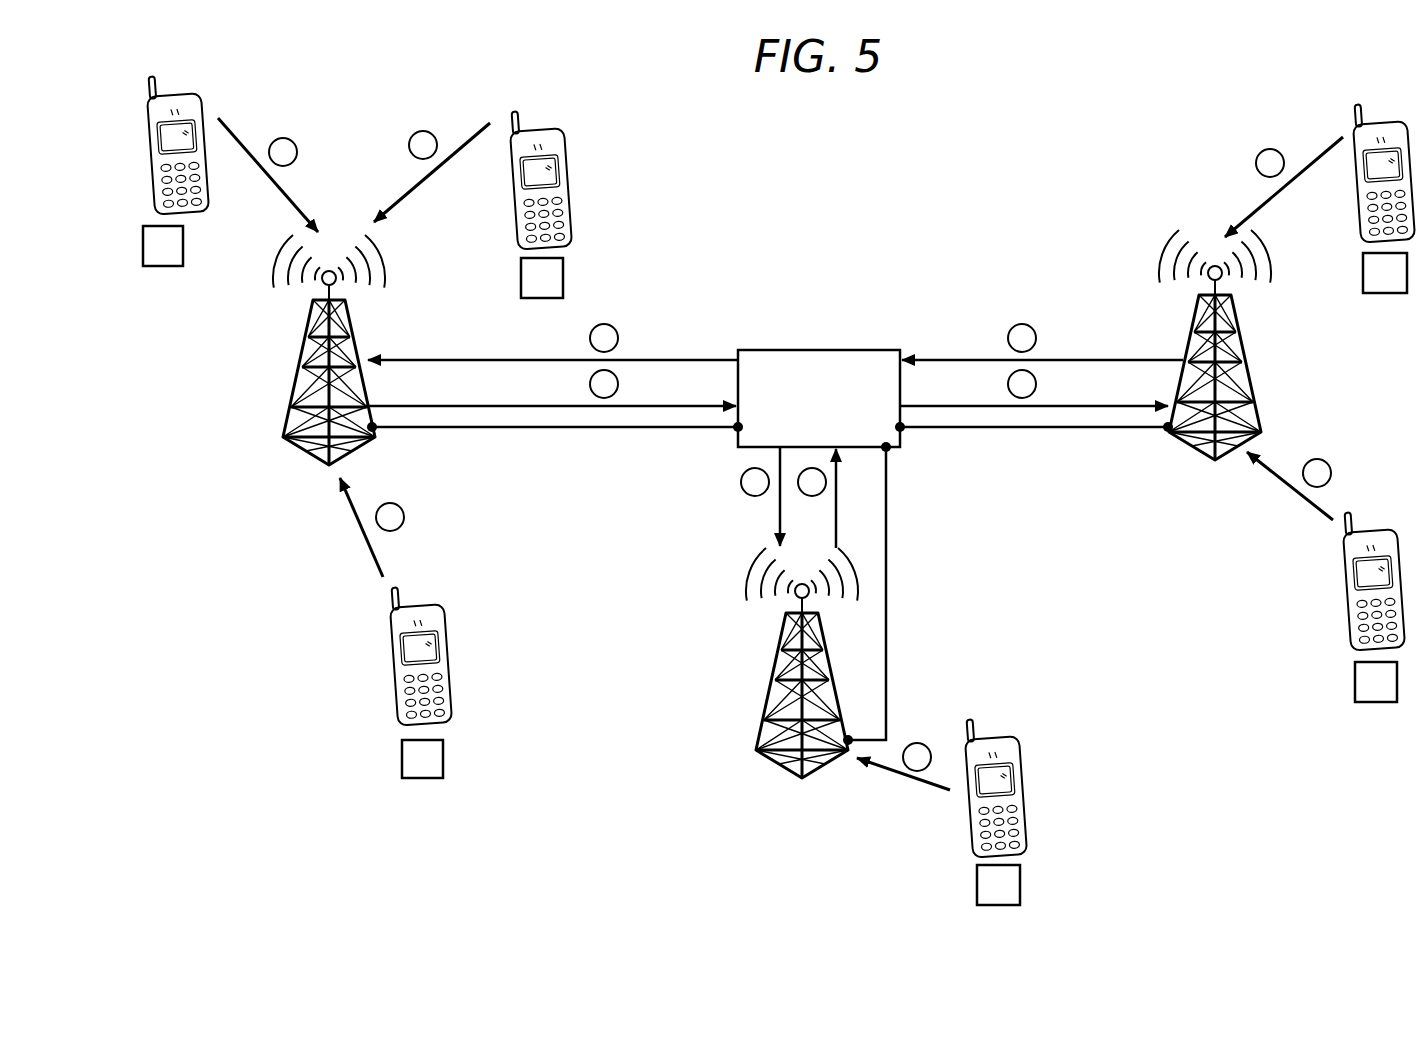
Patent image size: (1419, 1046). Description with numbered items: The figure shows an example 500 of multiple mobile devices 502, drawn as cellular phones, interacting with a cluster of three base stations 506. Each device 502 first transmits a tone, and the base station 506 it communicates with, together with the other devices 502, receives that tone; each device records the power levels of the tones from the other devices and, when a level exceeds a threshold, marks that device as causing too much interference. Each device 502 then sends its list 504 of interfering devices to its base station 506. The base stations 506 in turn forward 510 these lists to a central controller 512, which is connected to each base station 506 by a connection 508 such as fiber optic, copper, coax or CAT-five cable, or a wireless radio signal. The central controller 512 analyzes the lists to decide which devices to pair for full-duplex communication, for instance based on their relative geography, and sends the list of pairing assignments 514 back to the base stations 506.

The example 500 is at (886, 158).
The device 502 is at (186, 98).
The list of interfering devices 504 is at (283, 136).
The base station 506 is at (291, 399).
The connection 508 is at (516, 430).
The forwarding of the list 510 is at (619, 384).
The central controller 512 is at (818, 350).
The list of pairing assignments 514 is at (619, 338).